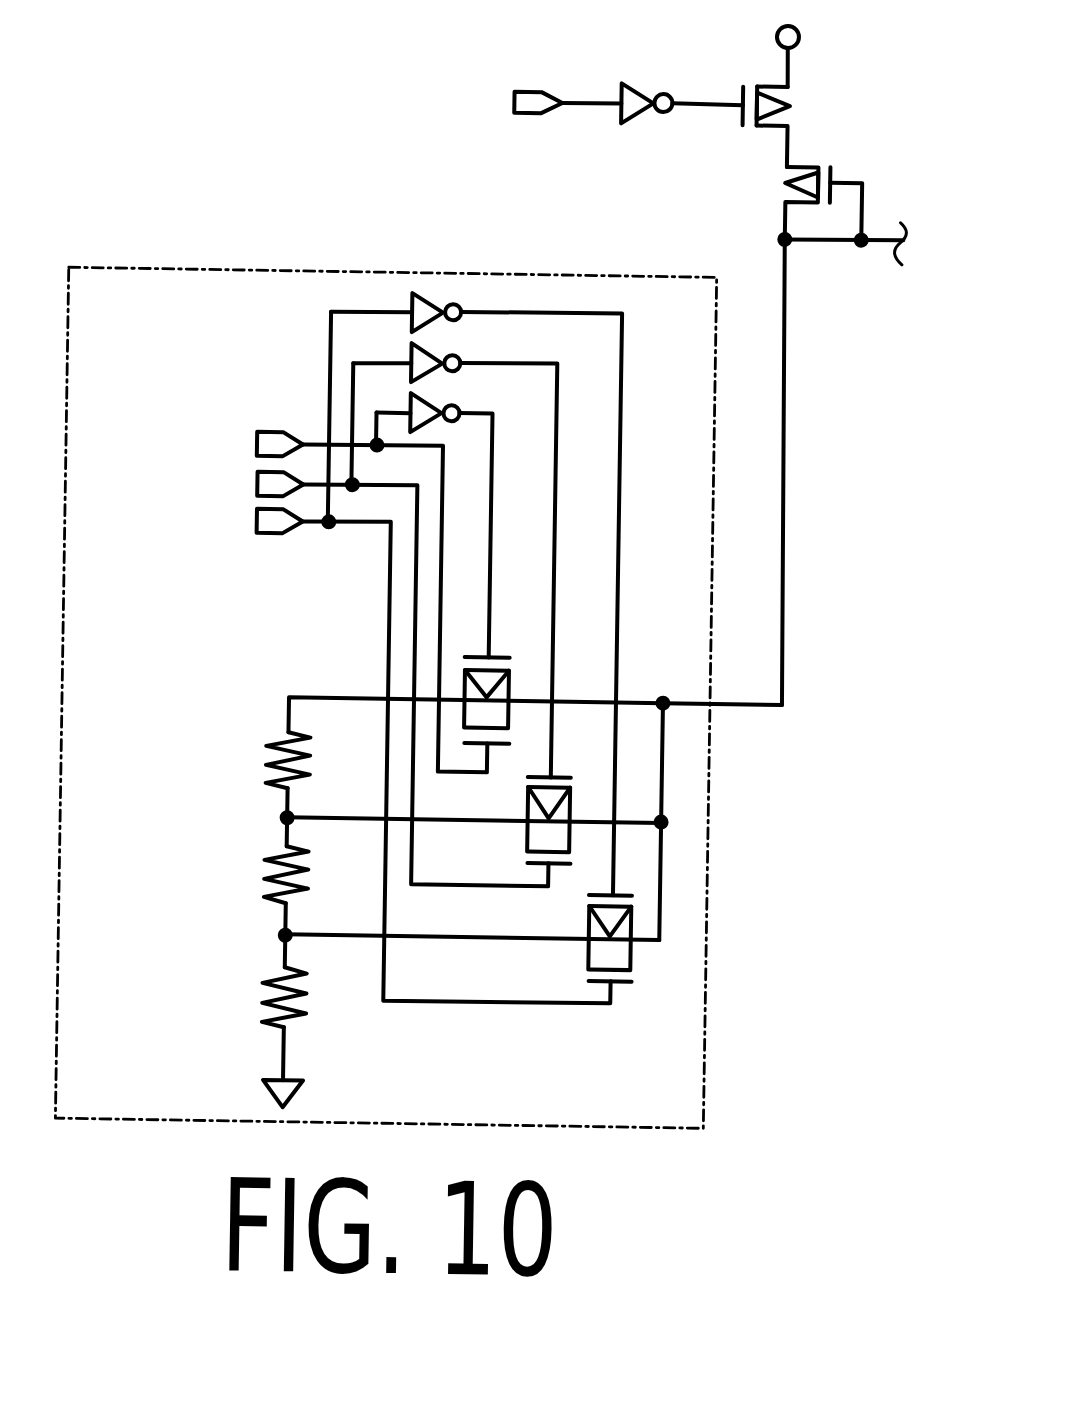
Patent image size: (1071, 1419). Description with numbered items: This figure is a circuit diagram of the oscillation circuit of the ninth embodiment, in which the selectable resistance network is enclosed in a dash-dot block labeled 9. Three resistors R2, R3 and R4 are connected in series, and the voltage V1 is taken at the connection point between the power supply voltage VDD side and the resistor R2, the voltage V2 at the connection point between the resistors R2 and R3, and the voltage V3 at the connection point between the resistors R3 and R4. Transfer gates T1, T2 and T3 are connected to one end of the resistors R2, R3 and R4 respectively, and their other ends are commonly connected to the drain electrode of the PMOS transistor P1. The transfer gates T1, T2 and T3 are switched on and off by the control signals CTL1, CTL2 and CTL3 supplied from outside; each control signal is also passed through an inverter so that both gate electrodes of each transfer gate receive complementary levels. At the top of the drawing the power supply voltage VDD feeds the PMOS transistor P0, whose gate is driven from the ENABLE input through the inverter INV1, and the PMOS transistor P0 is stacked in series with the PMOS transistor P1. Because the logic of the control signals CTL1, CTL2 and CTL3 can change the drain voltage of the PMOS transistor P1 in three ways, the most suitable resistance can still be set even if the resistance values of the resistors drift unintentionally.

The reference voltage generating circuit 9 is at (172, 272).
The inverter INV1 is at (628, 80).
The P-channel MOS transistor P0 is at (788, 101).
The PMOS transistor P1 is at (769, 177).
The power supply voltage VDD is at (824, 56).
The enable signal input ENABLE is at (491, 104).
The control signal CTL1 is at (315, 600).
The control signal CTL2 is at (345, 677).
The control signal CTL3 is at (376, 754).
The transfer gate T1 is at (504, 652).
The transfer gate T2 is at (522, 828).
The transfer gate T3 is at (583, 950).
The voltage V1 is at (443, 711).
The voltage V2 is at (443, 819).
The voltage V3 is at (438, 937).
The resistor R2 is at (268, 757).
The resistor R3 is at (268, 877).
The resistor R4 is at (257, 997).